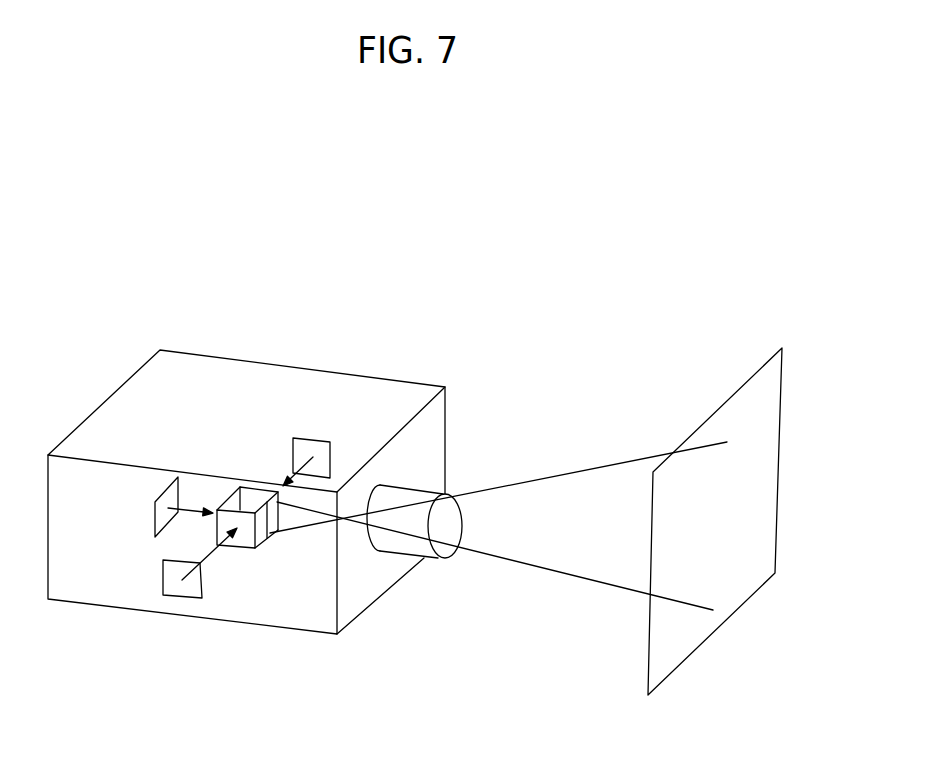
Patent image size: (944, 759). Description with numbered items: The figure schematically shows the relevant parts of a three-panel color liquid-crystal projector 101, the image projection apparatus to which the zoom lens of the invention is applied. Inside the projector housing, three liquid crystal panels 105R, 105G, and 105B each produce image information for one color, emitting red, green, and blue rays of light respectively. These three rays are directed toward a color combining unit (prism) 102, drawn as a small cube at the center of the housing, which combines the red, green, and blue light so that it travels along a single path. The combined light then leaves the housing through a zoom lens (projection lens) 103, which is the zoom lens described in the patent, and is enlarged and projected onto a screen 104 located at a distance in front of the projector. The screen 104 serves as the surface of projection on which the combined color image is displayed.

The color liquid-crystal projector 101 is at (112, 394).
The color combining unit (prism) 102 is at (250, 548).
The zoom lens (projection lens) 103 is at (420, 557).
The screen 104 is at (720, 407).
The liquid crystal panel (blue) 105B is at (315, 438).
The liquid crystal panel (green) 105G is at (155, 510).
The liquid crystal panel (red) 105R is at (163, 571).